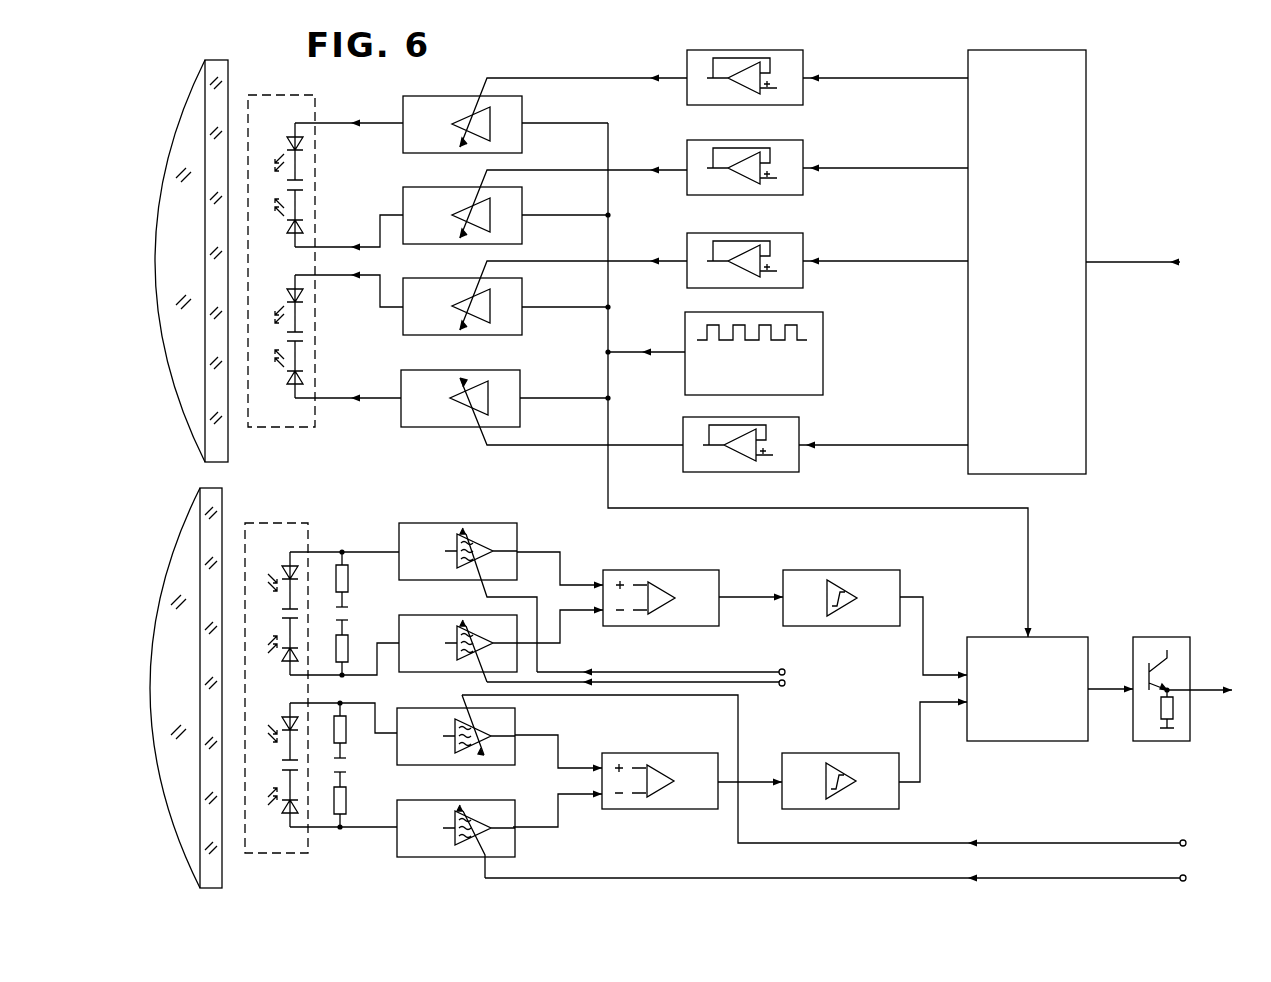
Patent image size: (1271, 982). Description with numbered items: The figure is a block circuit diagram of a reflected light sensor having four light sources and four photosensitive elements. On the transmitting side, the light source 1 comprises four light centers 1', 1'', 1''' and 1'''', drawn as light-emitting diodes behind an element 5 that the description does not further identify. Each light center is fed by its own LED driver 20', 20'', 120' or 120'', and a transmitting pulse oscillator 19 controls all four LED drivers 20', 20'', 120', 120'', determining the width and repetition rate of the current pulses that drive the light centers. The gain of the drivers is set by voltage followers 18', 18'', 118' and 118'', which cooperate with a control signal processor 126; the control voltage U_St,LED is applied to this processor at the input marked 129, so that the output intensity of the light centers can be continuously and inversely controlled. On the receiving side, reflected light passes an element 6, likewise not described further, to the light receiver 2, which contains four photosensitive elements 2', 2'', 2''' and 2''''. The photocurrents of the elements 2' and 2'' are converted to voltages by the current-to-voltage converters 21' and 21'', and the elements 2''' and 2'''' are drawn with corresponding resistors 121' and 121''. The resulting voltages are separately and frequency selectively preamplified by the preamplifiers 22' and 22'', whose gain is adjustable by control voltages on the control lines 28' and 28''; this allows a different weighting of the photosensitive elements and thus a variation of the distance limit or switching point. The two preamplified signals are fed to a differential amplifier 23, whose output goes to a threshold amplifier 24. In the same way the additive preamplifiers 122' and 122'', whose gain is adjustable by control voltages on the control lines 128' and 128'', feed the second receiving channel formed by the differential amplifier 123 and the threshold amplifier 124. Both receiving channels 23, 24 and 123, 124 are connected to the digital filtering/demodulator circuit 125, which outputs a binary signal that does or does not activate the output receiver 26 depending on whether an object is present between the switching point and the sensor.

The transmitting lens 5 is at (161, 210).
The receiving lens 6 is at (161, 644).
The light source 1 is at (325, 246).
The light center 1'' is at (329, 150).
The light center 1' is at (329, 223).
The light center 1'''' is at (328, 302).
The light center 1''' is at (328, 376).
The LED driver 20'' is at (545, 110).
The LED driver 20' is at (545, 202).
The LED driver 120'' is at (545, 293).
The LED driver 120' is at (542, 394).
The voltage follower 18'' is at (827, 75).
The voltage follower 18' is at (827, 165).
The voltage follower 118'' is at (827, 258).
The voltage follower 118' is at (825, 444).
The transmitting pulse oscillator 19 is at (823, 326).
The control signal processor 126 is at (1086, 151).
The LED control voltage input 129 is at (1122, 258).
The light receiver 2 is at (322, 674).
The photosensitive element 2'' is at (327, 576).
The photosensitive element 2' is at (327, 653).
The photosensitive element 2'''' is at (324, 731).
The photosensitive element 2''' is at (323, 806).
The current-to-voltage converter 21'' is at (359, 578).
The current-to-voltage converter 21' is at (358, 649).
The load resistor 121'' is at (360, 730).
The load resistor 121' is at (359, 801).
The preamplifier 22'' is at (501, 586).
The preamplifier 22' is at (501, 636).
The additive preamplifier 122'' is at (499, 728).
The additive preamplifier 122' is at (499, 827).
The differential amplifier 23 is at (619, 568).
The threshold amplifier 24 is at (797, 568).
The differential amplifier 123 is at (615, 752).
The threshold amplifier 124 is at (795, 752).
The control line 28' is at (693, 667).
The control line 28'' is at (668, 683).
The control line 128' is at (857, 777).
The control line 128'' is at (868, 872).
The digital filtering/demodulator circuit 125 is at (984, 742).
The output receiver 26 is at (1147, 636).